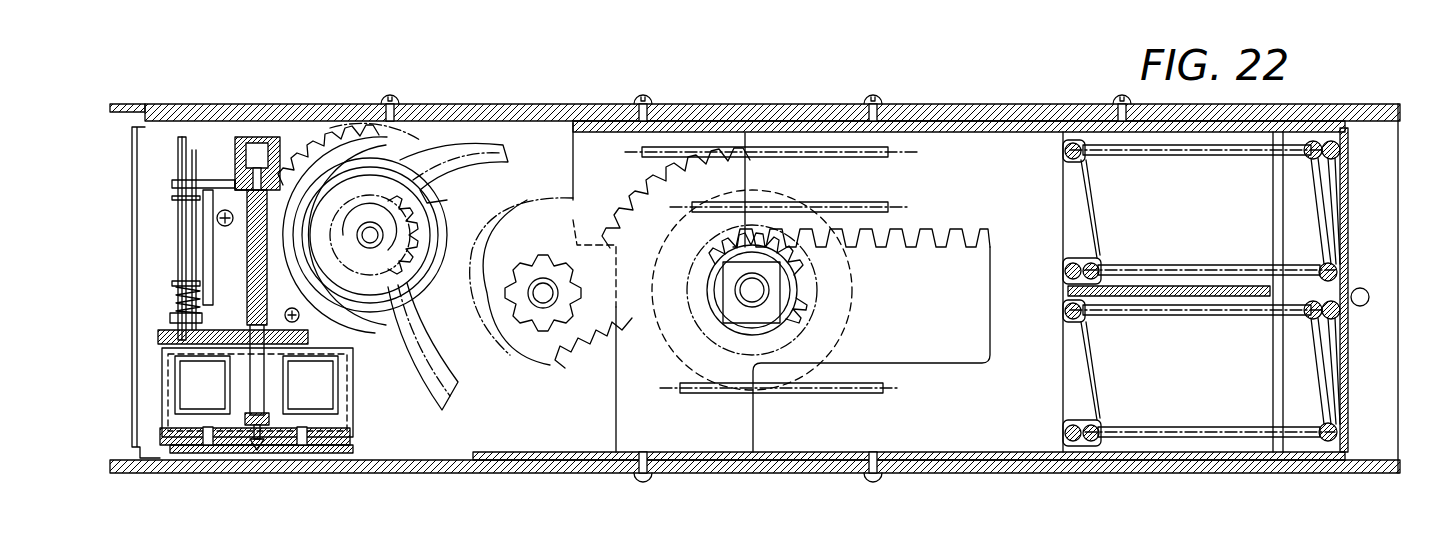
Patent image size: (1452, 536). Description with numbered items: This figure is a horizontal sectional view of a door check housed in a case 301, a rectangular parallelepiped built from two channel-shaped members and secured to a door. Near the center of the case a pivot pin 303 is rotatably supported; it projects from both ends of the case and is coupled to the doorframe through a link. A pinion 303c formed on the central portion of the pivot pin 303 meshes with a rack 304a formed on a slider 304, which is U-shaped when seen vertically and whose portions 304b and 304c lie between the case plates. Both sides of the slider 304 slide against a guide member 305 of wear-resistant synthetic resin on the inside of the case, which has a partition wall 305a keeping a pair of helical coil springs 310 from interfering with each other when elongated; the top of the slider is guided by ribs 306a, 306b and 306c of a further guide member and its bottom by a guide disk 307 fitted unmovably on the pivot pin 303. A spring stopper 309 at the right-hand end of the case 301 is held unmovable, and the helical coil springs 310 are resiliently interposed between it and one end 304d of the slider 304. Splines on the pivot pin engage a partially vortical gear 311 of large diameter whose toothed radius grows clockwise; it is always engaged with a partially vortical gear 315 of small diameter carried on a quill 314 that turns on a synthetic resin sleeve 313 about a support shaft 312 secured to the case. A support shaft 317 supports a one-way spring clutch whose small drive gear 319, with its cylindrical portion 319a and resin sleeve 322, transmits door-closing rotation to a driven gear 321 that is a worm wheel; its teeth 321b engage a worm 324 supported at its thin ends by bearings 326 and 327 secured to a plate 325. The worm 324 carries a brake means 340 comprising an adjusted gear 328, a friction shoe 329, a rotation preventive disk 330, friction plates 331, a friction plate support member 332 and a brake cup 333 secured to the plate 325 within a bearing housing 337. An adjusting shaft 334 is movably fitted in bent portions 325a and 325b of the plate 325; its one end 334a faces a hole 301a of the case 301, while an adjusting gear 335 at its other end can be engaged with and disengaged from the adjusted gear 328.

The case 301 is at (538, 107).
The hole of the case 301a is at (178, 107).
The pivot pin 303 is at (722, 262).
The pinion 303c is at (790, 300).
The slider 304 is at (990, 313).
The rack 304a is at (872, 262).
The bracket upper portion 304b is at (1000, 110).
The bracket lower portion 304c is at (1003, 475).
The end of the slider 304d is at (1073, 191).
The guide member 305 is at (658, 450).
The partition wall 305a is at (1240, 293).
The rib of the guide member 306a is at (883, 157).
The rib of the guide member 306b is at (882, 210).
The rib of the guide member 306c is at (865, 388).
The guide disk 307 is at (660, 300).
The spring stopper 309 is at (1348, 383).
The helical coil springs 310 is at (1315, 175).
The partially vortical gear of large diameter 311 is at (850, 305).
The support shaft 312 is at (543, 305).
The synthetic resin sleeve 313 is at (543, 275).
The quill 314 is at (508, 300).
The partially vortical gear of small diameter 315 is at (568, 347).
The support shaft 317 is at (396, 256).
The drive gear 319 is at (447, 200).
The arm end 319a is at (445, 147).
The driven gear 321 is at (383, 322).
The teeth of the driven gear 321b is at (336, 135).
The synthetic resin sleeve 322 is at (372, 236).
The worm 324 is at (172, 187).
The plate 325 is at (180, 232).
The bent portion of the plate 325a is at (183, 180).
The bent portion of the plate 325b is at (174, 315).
The bearing 326 is at (268, 137).
The bearing 327 is at (258, 442).
The adjusted gear 328 is at (170, 324).
The friction shoe 329 is at (215, 358).
The rotation preventive disk 330 is at (303, 363).
The friction plates 331 is at (163, 370).
The friction plate support member 332 is at (158, 405).
The brake cup 333 is at (163, 395).
The adjusting shaft 334 is at (208, 240).
The end of the adjusting shaft 334a is at (206, 135).
The adjusting gear 335 is at (162, 340).
The bearing housing 337 is at (258, 136).
The brake means 340 is at (366, 437).